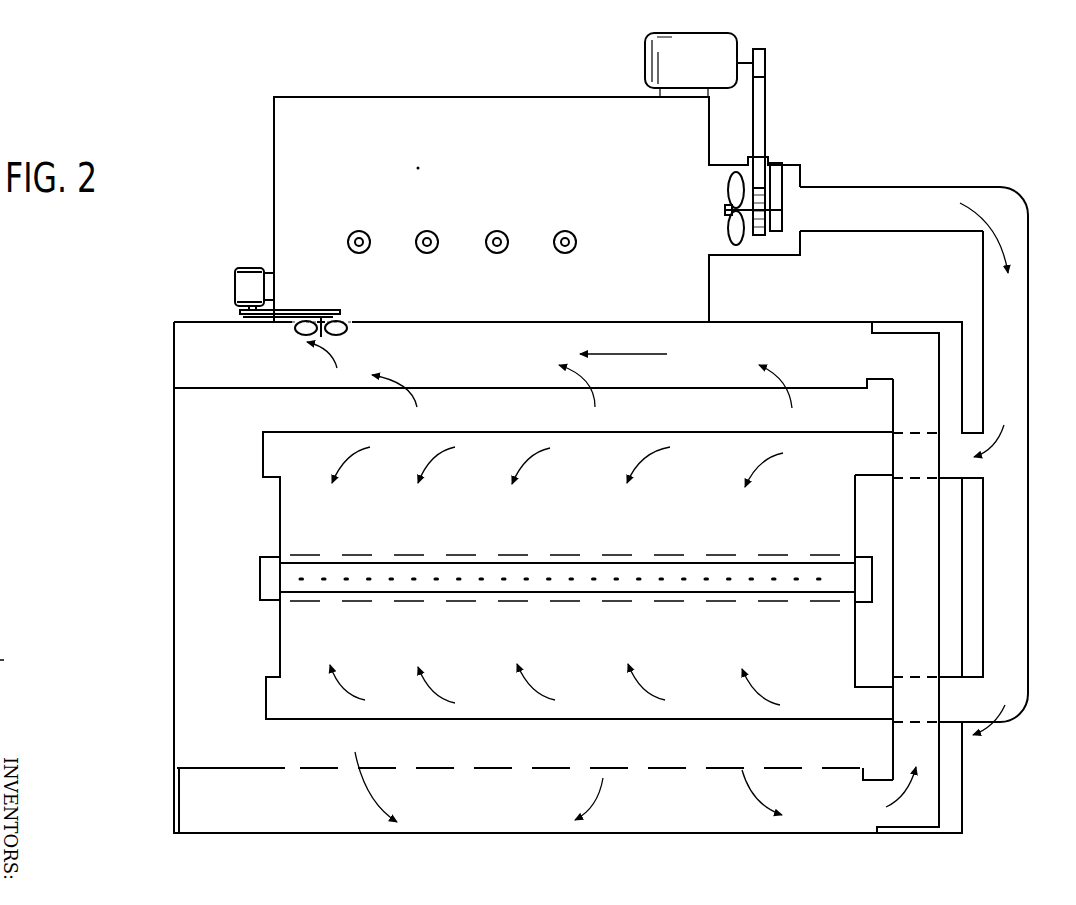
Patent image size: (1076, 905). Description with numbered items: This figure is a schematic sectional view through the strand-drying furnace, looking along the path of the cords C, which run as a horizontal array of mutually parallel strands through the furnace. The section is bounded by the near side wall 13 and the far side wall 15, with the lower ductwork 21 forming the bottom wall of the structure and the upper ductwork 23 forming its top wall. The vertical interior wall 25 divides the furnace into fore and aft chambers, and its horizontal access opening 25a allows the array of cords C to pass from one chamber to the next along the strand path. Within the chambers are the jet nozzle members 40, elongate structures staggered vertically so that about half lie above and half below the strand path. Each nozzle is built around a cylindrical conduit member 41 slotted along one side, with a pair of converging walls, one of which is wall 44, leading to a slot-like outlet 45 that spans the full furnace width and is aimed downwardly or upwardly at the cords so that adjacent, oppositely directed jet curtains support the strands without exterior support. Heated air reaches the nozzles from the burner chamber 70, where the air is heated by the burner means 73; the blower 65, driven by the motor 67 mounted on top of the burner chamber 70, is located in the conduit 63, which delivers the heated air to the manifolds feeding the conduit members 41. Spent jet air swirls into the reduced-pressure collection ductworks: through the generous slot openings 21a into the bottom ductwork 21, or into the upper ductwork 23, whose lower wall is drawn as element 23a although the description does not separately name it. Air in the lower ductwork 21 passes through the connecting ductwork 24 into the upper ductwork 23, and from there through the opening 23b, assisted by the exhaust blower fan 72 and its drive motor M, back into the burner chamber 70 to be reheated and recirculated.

The side wall 13 is at (174, 605).
The side wall 15 is at (962, 380).
The lower ductwork 21 is at (174, 812).
The slot openings 21a is at (315, 767).
The upper ductwork 23 is at (163, 352).
The plenum bottom wall 23a is at (278, 388).
The opening 23b is at (344, 326).
The ductwork 24 is at (945, 527).
The vertical interior wall 25 is at (232, 525).
The opening 25a is at (262, 557).
The nozzle members 40 is at (565, 430).
The cylindrical conduit member 41 is at (263, 468).
The wall 44 is at (410, 512).
The slot-like outlet 45 is at (527, 569).
The conduit 63 is at (1015, 186).
The blower 65 is at (805, 165).
The motor 67 is at (646, 46).
The burner chamber 70 is at (450, 100).
The blower fan 72 is at (344, 333).
The burner means 73 is at (497, 232).
The cords C is at (642, 578).
The fan motor M is at (242, 268).